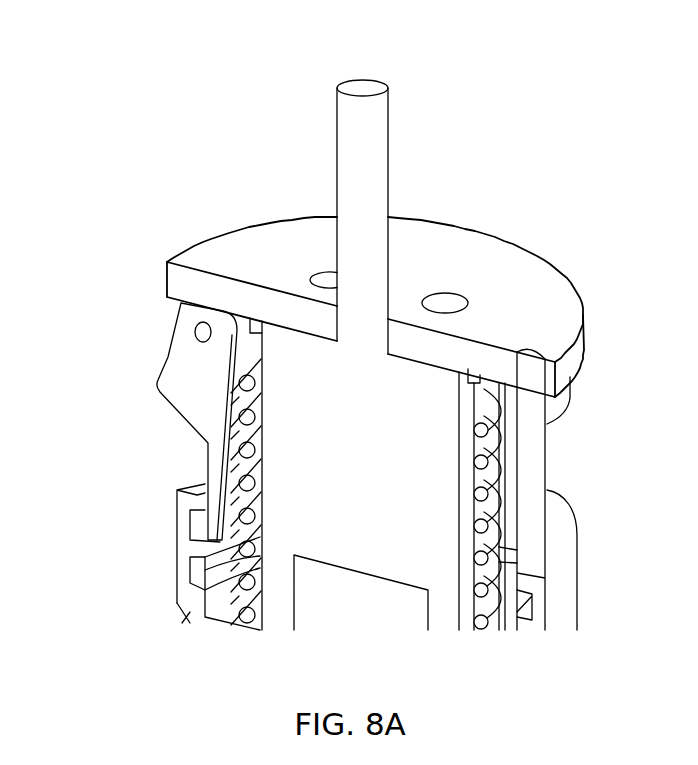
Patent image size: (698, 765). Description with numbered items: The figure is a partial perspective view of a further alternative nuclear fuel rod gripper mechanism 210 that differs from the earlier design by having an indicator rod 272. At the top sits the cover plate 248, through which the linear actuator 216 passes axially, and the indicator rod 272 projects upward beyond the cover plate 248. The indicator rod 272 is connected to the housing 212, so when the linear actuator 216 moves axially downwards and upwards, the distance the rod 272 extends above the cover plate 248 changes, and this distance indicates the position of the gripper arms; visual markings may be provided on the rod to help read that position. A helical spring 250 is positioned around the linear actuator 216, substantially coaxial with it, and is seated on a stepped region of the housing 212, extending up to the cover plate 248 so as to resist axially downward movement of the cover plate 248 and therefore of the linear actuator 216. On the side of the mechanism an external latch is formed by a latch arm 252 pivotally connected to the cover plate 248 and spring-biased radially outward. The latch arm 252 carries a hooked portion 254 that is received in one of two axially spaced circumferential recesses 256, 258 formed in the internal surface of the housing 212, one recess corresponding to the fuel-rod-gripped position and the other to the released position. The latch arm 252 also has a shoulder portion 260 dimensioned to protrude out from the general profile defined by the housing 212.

The gripper mechanism 210 is at (592, 116).
The cover plate 248 is at (260, 248).
The shoulder portion 260 is at (173, 370).
The latch arm 252 is at (217, 481).
The hooked portion 254 is at (200, 532).
The circumferential recess 256 is at (200, 568).
The housing 212 is at (192, 622).
The linear actuator 216 is at (383, 486).
The indicator rod 272 is at (552, 450).
The helical spring 250 is at (490, 517).
The circumferential recess 258 is at (538, 618).